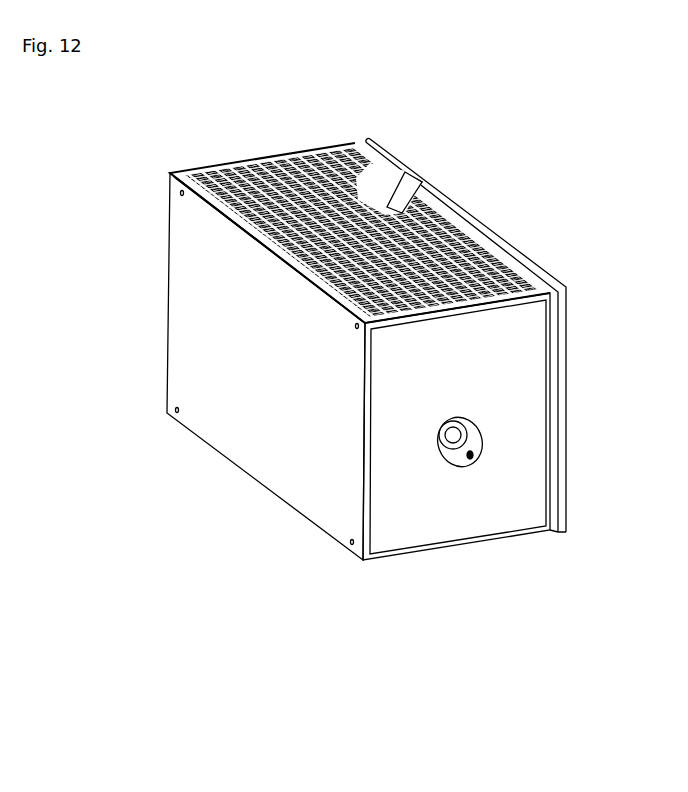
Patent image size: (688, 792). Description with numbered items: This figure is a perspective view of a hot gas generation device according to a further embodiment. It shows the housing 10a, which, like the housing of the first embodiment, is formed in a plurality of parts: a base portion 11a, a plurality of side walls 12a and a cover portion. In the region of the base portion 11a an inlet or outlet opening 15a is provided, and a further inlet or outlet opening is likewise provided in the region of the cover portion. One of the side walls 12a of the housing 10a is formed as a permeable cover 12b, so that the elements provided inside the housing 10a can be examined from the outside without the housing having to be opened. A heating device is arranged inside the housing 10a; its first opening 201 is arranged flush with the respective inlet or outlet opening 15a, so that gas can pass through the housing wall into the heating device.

The housing 10a is at (355, 379).
The base portion 11a is at (497, 485).
The side walls 12a is at (251, 437).
The permeable cover 12b is at (447, 252).
The inlet or outlet opening 15a is at (455, 465).
The first opening 201 is at (447, 456).